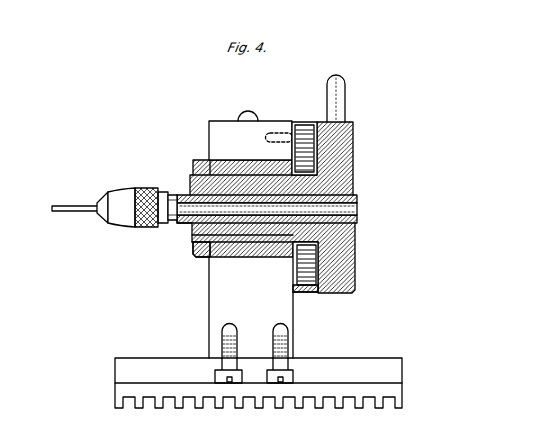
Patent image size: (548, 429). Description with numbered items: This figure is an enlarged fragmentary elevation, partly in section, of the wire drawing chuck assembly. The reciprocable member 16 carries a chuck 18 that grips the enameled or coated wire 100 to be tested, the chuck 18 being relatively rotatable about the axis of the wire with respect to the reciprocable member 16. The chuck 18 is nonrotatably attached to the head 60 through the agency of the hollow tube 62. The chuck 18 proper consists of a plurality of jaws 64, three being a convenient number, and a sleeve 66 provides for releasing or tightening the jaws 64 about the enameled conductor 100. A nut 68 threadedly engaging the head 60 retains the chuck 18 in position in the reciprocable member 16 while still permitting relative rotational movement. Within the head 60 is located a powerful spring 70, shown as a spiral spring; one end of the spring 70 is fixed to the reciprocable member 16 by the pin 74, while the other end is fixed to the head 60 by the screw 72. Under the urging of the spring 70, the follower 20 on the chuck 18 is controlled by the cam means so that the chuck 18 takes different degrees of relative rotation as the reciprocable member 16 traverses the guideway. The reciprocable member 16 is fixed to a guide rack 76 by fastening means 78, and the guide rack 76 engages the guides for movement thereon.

The reciprocable member 16 is at (218, 121).
The chuck 18 is at (165, 192).
The follower 20 is at (345, 85).
The head 60 is at (355, 171).
The hollow tube 62 is at (357, 210).
The jaws 64 is at (102, 217).
The sleeve 66 is at (150, 228).
The nut 68 is at (197, 251).
The spring 70 is at (315, 155).
The screw 72 is at (318, 248).
The pin 74 is at (270, 133).
The guide rack 76 is at (392, 344).
The fastening means 78 is at (217, 370).
The enameled wire 100 is at (82, 193).